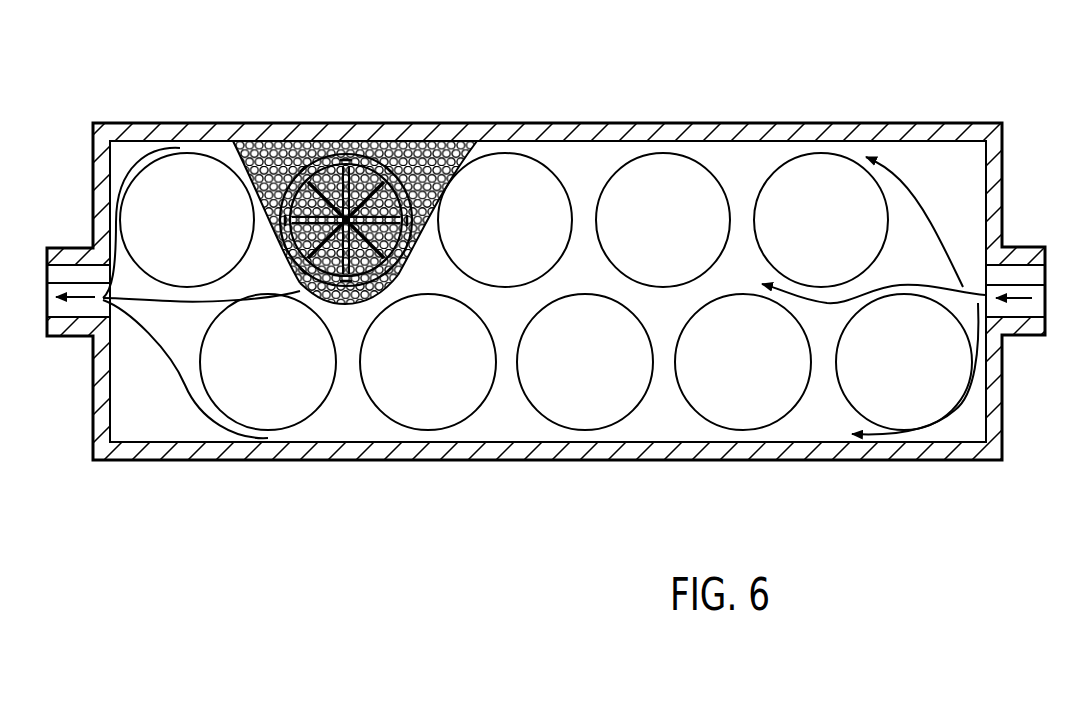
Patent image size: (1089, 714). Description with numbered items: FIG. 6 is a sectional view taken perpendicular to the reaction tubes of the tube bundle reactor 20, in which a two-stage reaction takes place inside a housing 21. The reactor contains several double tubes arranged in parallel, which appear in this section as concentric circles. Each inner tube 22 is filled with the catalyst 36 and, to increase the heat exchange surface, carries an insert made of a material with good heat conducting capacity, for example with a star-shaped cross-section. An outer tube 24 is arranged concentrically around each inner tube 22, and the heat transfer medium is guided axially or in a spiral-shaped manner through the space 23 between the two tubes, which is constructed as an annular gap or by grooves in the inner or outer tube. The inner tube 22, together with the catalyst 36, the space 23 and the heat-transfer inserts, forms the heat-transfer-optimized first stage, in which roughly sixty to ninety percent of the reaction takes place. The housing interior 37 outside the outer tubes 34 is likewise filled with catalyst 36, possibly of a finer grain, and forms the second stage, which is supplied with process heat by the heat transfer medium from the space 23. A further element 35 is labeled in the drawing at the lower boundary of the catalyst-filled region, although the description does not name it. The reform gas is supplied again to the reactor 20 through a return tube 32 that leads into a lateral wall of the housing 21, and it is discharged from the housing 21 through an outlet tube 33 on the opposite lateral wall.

The reactor 20 is at (644, 101).
The housing 21 is at (430, 452).
The inner tube 22 is at (346, 156).
The space 23 is at (298, 158).
The outer tube 24 is at (320, 160).
The return tube 32 is at (1013, 278).
The outlet tube 33 is at (76, 278).
The outer tube 34 is at (380, 165).
The screen 35 is at (312, 289).
The catalyst 36 is at (444, 146).
The housing interior 37 is at (941, 184).